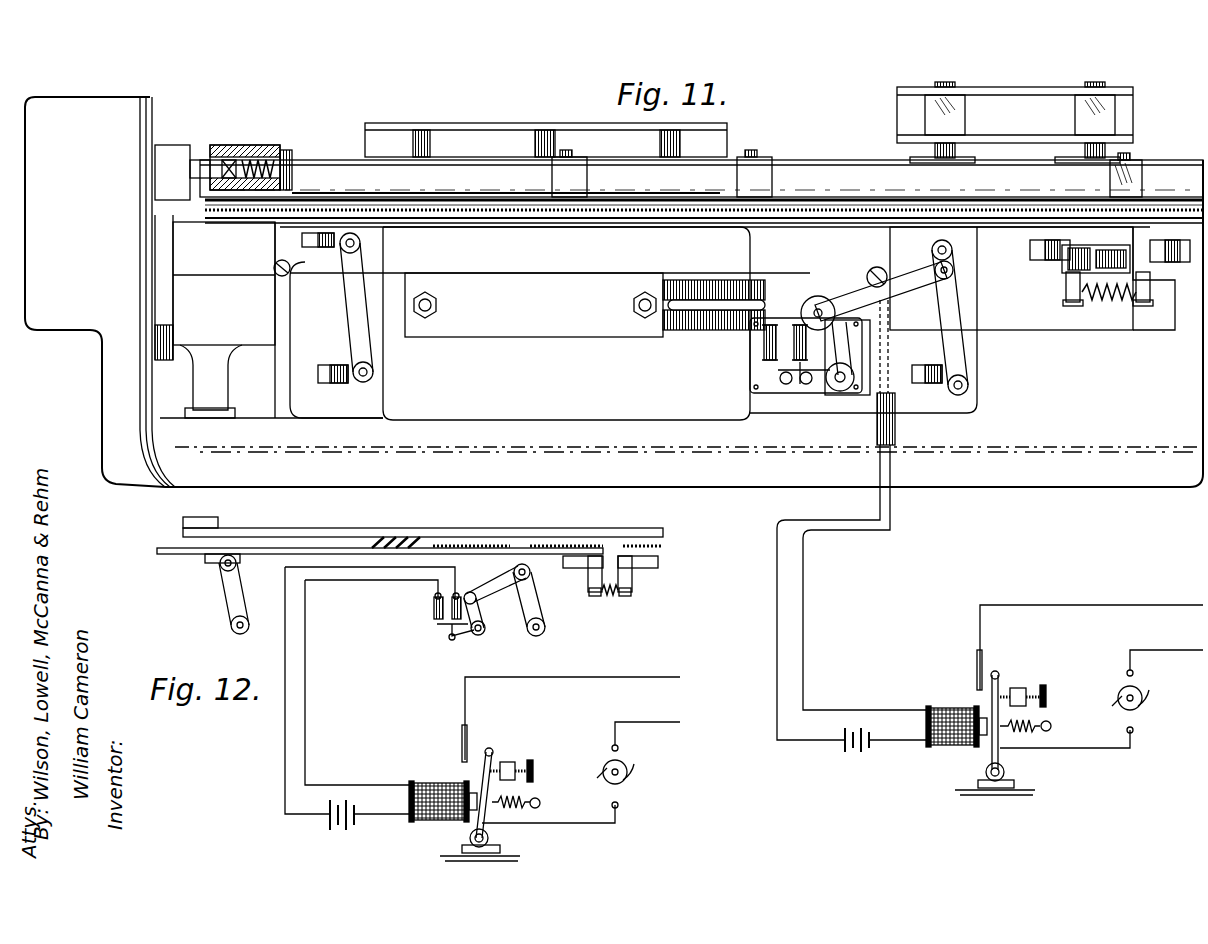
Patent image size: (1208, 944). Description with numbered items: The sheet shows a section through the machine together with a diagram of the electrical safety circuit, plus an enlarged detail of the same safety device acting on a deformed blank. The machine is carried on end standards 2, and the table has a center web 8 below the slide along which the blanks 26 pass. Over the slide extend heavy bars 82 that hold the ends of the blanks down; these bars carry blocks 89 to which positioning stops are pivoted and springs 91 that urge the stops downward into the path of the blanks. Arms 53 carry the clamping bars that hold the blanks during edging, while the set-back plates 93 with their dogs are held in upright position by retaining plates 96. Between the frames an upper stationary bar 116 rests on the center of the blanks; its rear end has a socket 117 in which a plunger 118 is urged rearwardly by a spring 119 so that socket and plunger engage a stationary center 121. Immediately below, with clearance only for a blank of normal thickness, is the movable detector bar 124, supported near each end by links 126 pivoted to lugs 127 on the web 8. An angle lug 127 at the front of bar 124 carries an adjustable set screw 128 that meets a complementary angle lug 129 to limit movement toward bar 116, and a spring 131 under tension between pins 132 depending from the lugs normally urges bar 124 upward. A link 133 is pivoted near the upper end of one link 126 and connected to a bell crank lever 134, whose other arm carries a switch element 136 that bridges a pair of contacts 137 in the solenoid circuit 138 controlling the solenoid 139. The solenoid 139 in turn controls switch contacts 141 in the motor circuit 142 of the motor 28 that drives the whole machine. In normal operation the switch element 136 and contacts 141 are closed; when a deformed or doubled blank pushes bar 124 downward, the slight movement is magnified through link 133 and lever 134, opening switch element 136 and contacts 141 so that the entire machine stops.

In FIG. 11, the end standard 2 is at (93, 110).
In FIG. 11, the center web 8 is at (1046, 437).
In FIG. 11, the blank 26 is at (455, 212).
In FIG. 12, the blank 26 is at (386, 540).
In FIG. 12, the motor 28 is at (628, 770).
In FIG. 11, the arm 53 is at (432, 140).
In FIG. 11, the bar 82 is at (803, 168).
In FIG. 11, the block 89 is at (1160, 163).
In FIG. 11, the spring 91 is at (898, 118).
In FIG. 11, the plate 93 is at (598, 330).
In FIG. 11, the retaining plate 96 is at (540, 265).
In FIG. 11, the upper stationary bar 116 is at (814, 207).
In FIG. 12, the upper stationary bar 116 is at (455, 536).
In FIG. 11, the socket 117 is at (246, 165).
In FIG. 11, the plunger 118 is at (280, 165).
In FIG. 11, the spring 119 is at (300, 170).
In FIG. 11, the stationary center 121 is at (199, 162).
In FIG. 11, the movable detector bar 124 is at (575, 226).
In FIG. 12, the movable detector bar 124 is at (272, 556).
In FIG. 11, the link 126 is at (346, 313).
In FIG. 12, the link 126 is at (228, 598).
In FIG. 11, the lug 127 is at (320, 385).
In FIG. 12, the lug 127 is at (593, 580).
In FIG. 11, the adjustable set screw 128 is at (1100, 252).
In FIG. 11, the complementary angle lug 129 is at (1180, 238).
In FIG. 12, the complementary angle lug 129 is at (634, 576).
In FIG. 11, the spring 131 is at (1090, 300).
In FIG. 12, the spring 131 is at (606, 595).
In FIG. 11, the pin 132 is at (1068, 289).
In FIG. 12, the pin 132 is at (632, 598).
In FIG. 11, the link 133 is at (902, 282).
In FIG. 12, the link 133 is at (492, 596).
In FIG. 11, the bell crank lever 134 is at (840, 395).
In FIG. 12, the bell crank lever 134 is at (484, 606).
In FIG. 11, the switch element 136 is at (782, 374).
In FIG. 12, the switch element 136 is at (446, 630).
In FIG. 11, the contact 137 is at (768, 352).
In FIG. 12, the contact 137 is at (436, 609).
In FIG. 12, the solenoid circuit 138 is at (337, 785).
In FIG. 12, the solenoid 139 is at (435, 812).
In FIG. 12, the switch contact 141 is at (470, 750).
In FIG. 12, the motor circuit 142 is at (628, 680).